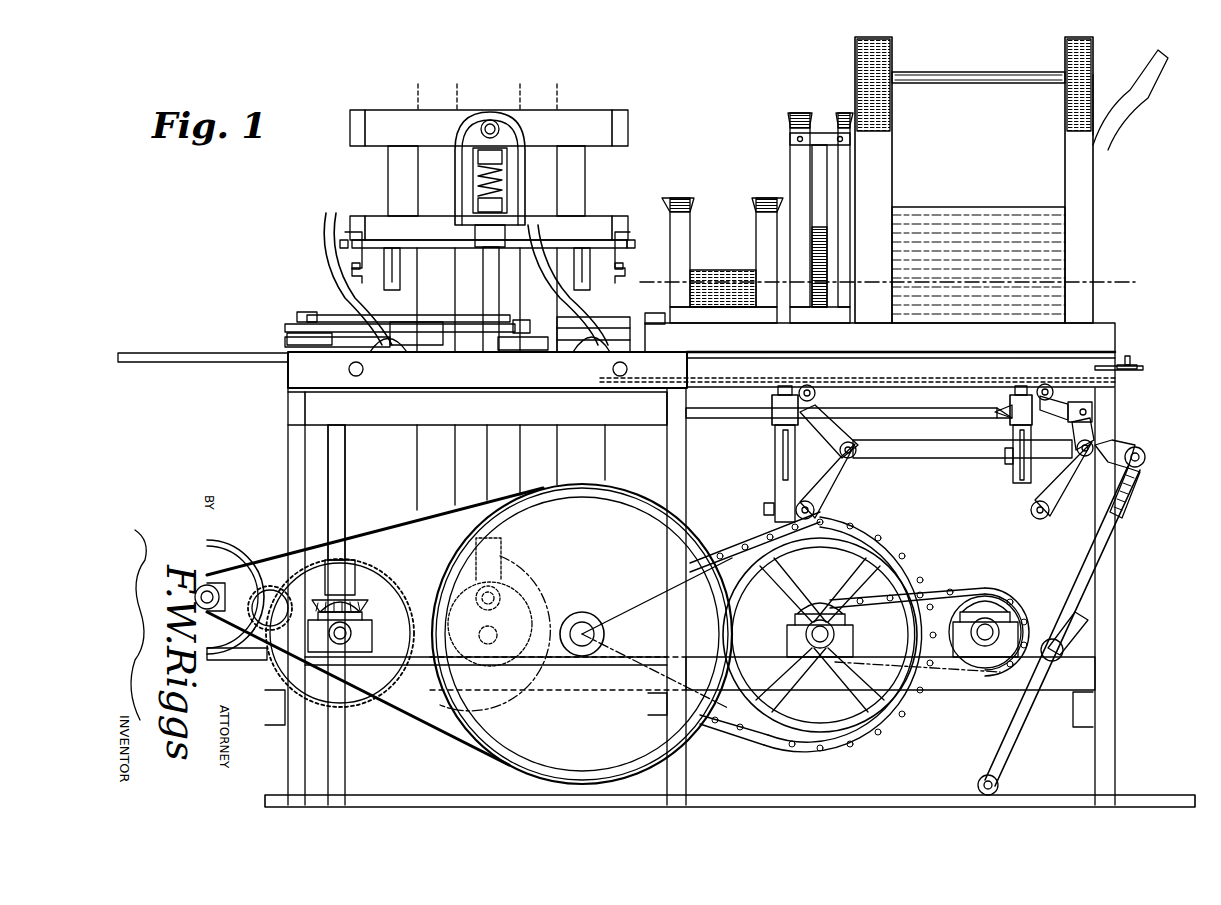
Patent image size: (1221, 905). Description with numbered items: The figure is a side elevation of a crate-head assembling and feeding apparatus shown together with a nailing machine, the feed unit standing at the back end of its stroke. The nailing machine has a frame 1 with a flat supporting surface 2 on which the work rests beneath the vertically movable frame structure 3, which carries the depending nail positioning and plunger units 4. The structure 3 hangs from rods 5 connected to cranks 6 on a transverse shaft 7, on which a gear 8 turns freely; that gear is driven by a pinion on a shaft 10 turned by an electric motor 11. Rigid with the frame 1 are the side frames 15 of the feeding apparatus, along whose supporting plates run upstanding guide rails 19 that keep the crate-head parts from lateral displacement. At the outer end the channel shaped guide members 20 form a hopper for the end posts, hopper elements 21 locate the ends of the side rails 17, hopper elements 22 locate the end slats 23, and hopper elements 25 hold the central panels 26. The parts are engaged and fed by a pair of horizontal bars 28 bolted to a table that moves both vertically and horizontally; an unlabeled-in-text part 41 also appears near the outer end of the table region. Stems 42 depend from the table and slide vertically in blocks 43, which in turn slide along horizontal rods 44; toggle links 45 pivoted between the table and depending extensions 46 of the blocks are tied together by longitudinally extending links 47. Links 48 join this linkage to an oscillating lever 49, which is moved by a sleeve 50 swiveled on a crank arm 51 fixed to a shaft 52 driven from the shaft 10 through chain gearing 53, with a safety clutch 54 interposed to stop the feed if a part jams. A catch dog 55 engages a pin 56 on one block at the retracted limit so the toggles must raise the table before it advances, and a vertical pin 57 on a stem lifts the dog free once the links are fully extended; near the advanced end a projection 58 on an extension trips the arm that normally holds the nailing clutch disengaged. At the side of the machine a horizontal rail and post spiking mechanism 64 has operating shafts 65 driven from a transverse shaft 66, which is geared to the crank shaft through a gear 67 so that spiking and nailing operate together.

The frame 1 is at (318, 398).
The flat supporting surface 2 is at (882, 281).
The vertically movable frame structure 3 is at (373, 133).
The nail positioning and plunger units 4 is at (388, 266).
The rods 5 is at (493, 463).
The cranks 6 is at (498, 636).
The transverse shaft 7 is at (530, 612).
The gear 8 is at (525, 582).
The shaft 10 is at (580, 646).
The electric motor 11 is at (218, 550).
The side frames 15 is at (810, 370).
The side rails 17 is at (935, 226).
The guide rails 19 is at (903, 349).
The channel shaped guide members 20 is at (1108, 110).
The hopper elements 21 is at (880, 132).
The hopper elements 22 is at (812, 169).
The end slats 23 is at (822, 234).
The hopper elements 25 is at (680, 220).
The central panels 26 is at (715, 272).
The horizontal bars 28 is at (1128, 362).
The guide plate 41 is at (1145, 366).
The stems 42 is at (783, 448).
The blocks 43 is at (782, 410).
The horizontal rods 44 is at (714, 425).
The toggle links 45 is at (835, 455).
The depending extensions 46 is at (1026, 506).
The longitudinally extending links 47 is at (925, 458).
The links 48 is at (1145, 450).
The oscillating lever 49 is at (1130, 502).
The sleeve 50 is at (1065, 646).
The crank arm 51 is at (1095, 616).
The shaft 52 is at (985, 650).
The chain gearing 53 is at (895, 562).
The safety clutch 54 is at (988, 612).
The catch dog 55 is at (1002, 418).
The pin 56 is at (1010, 423).
The vertical pin 57 is at (1005, 460).
The projection 58 is at (764, 508).
The spiking mechanism 64 is at (470, 334).
The operating shafts 65 is at (340, 490).
The transverse shaft 66 is at (338, 646).
The gear 67 is at (410, 653).